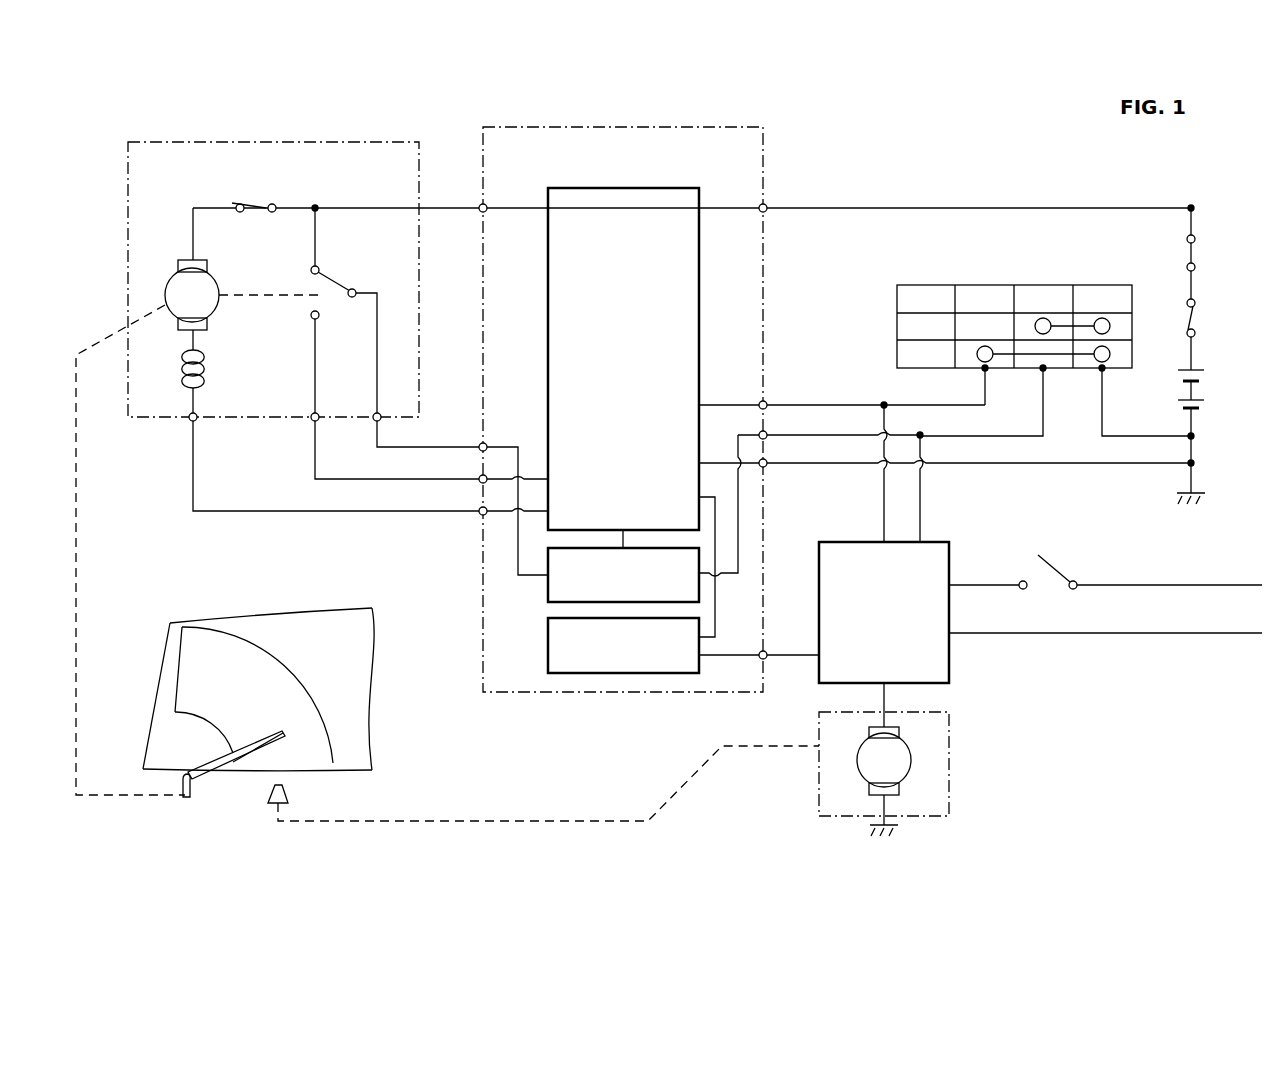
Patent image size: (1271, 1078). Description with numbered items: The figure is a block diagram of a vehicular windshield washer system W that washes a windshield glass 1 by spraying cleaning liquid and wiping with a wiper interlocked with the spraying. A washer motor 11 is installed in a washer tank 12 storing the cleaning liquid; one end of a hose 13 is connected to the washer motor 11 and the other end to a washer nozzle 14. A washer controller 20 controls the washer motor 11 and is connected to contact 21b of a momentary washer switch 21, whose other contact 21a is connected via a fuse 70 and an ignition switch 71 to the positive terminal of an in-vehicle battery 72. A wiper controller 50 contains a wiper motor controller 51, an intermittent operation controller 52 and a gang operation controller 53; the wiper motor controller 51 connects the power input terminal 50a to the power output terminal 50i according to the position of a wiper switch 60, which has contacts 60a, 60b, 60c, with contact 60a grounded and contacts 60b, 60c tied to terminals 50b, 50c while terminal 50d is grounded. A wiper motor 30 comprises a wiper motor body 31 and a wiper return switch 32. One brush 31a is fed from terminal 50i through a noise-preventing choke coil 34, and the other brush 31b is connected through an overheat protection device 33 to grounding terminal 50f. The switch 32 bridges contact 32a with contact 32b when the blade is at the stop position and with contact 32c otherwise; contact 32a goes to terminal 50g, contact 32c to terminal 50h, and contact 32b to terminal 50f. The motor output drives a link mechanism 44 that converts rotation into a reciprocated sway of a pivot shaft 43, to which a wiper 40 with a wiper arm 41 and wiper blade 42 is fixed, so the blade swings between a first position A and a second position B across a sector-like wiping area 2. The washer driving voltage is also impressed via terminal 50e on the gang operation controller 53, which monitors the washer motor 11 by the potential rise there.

The washer system W is at (150, 120).
The wiper motor 30 is at (340, 142).
The wiper motor body 31 is at (164, 296).
The brush 31a is at (208, 325).
The brush 31b is at (176, 264).
The wiper return switch 32 is at (315, 286).
The contact 32a is at (355, 290).
The contact 32b is at (318, 268).
The contact 32c is at (318, 319).
The overheat protection device 33 is at (236, 204).
The noise-preventing choke coil 34 is at (200, 380).
The wiper 40 is at (262, 772).
The wiper arm 41 is at (217, 753).
The wiper blade 42 is at (305, 730).
The pivot shaft 43 is at (190, 800).
The link mechanism 44 is at (78, 512).
The wiper controller 50 is at (682, 127).
The terminal 50a is at (766, 205).
The terminal 50b is at (766, 433).
The terminal 50c is at (766, 403).
The terminal 50d is at (766, 461).
The terminal 50e is at (766, 653).
The terminal 50f is at (480, 204).
The terminal 50g is at (479, 445).
The terminal 50h is at (479, 477).
The terminal 50i is at (479, 509).
The wiper motor controller 51 is at (548, 356).
The intermittent operation controller 52 is at (548, 592).
The gang operation controller 53 is at (548, 645).
The wiper switch 60 is at (1044, 339).
The contact 60a is at (1105, 370).
The contact 60b is at (1046, 370).
The contact 60c is at (988, 370).
The fuse 70 is at (1194, 250).
The ignition switch 71 is at (1194, 315).
The in-vehicle battery 72 is at (1204, 368).
The washer controller 20 is at (949, 660).
The washer switch 21 is at (1105, 590).
The contact 21a is at (1075, 589).
The contact 21b is at (1025, 589).
The washer motor 11 is at (908, 745).
The washer tank 12 is at (949, 790).
The hose 13 is at (574, 818).
The washer nozzle 14 is at (290, 787).
The windshield glass 1 is at (317, 623).
The wiping area 2 is at (232, 647).
The first position (stop position) A is at (380, 762).
The second position B is at (182, 617).